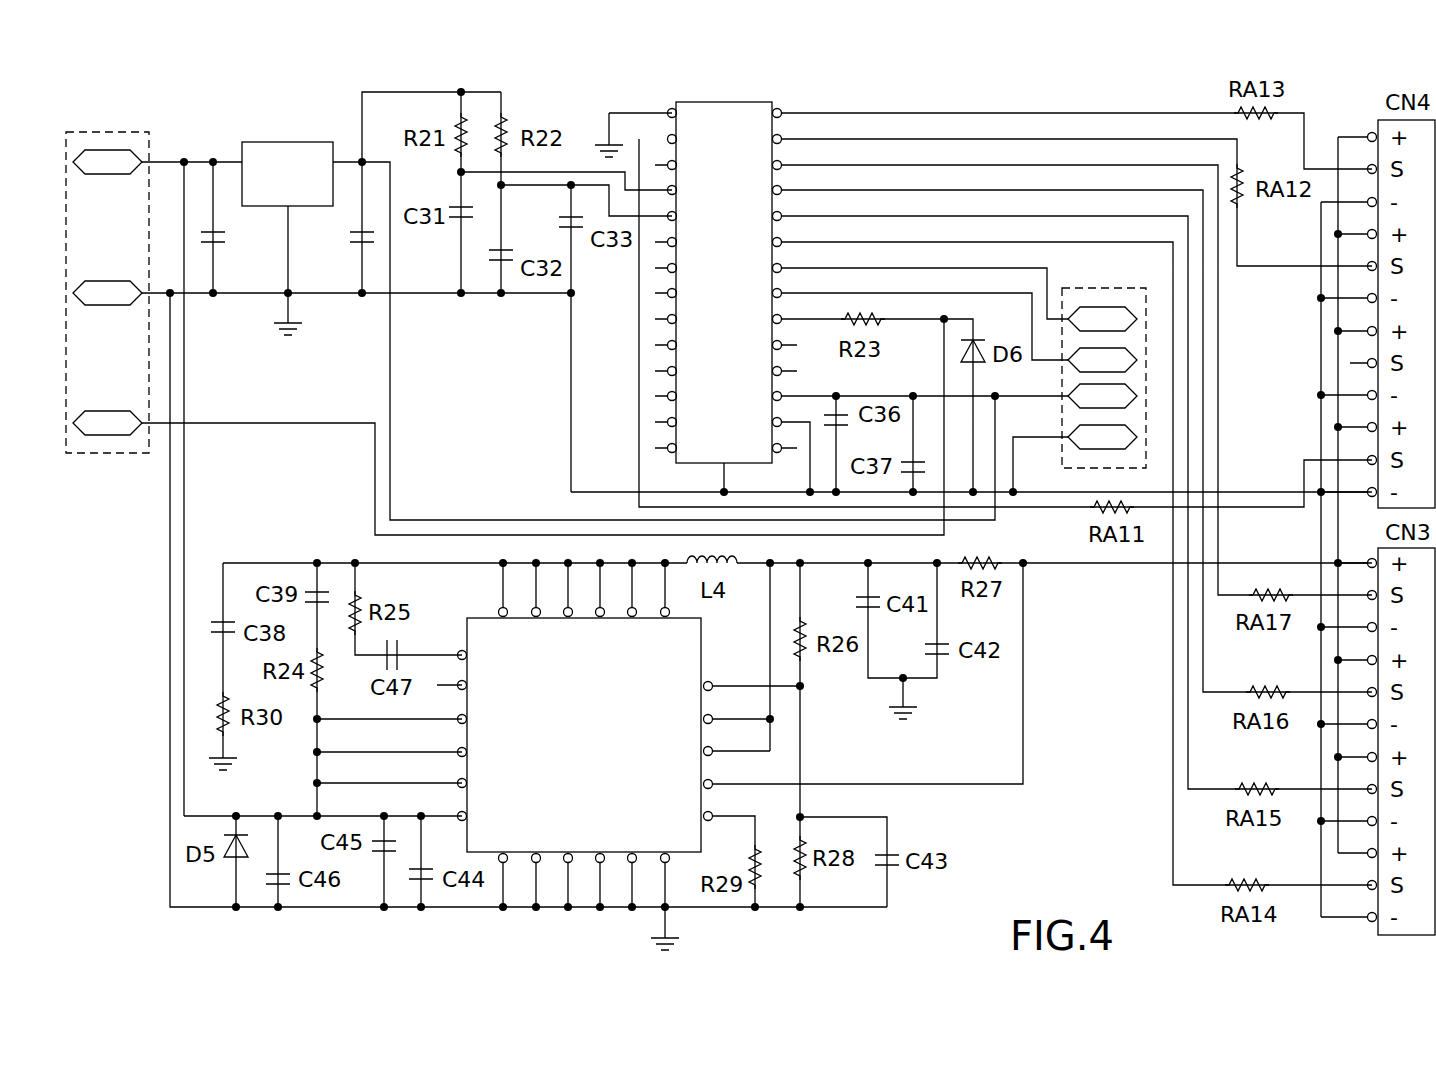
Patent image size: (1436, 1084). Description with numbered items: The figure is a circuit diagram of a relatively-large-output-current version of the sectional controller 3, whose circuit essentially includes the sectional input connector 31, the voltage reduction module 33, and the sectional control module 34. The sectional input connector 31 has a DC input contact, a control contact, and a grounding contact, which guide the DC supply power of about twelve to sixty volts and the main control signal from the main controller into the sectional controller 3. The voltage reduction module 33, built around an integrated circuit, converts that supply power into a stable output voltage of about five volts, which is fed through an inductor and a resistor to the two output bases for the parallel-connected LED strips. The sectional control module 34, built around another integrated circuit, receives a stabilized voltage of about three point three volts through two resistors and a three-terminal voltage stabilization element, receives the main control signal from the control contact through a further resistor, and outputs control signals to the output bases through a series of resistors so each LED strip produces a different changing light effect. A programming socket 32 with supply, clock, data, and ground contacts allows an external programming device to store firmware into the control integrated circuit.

The sectional controller 3 is at (228, 112).
The sectional input connector 31 is at (112, 130).
The programming socket 32 is at (1090, 288).
The voltage reduction module 33 is at (808, 746).
The sectional control module 34 is at (800, 95).